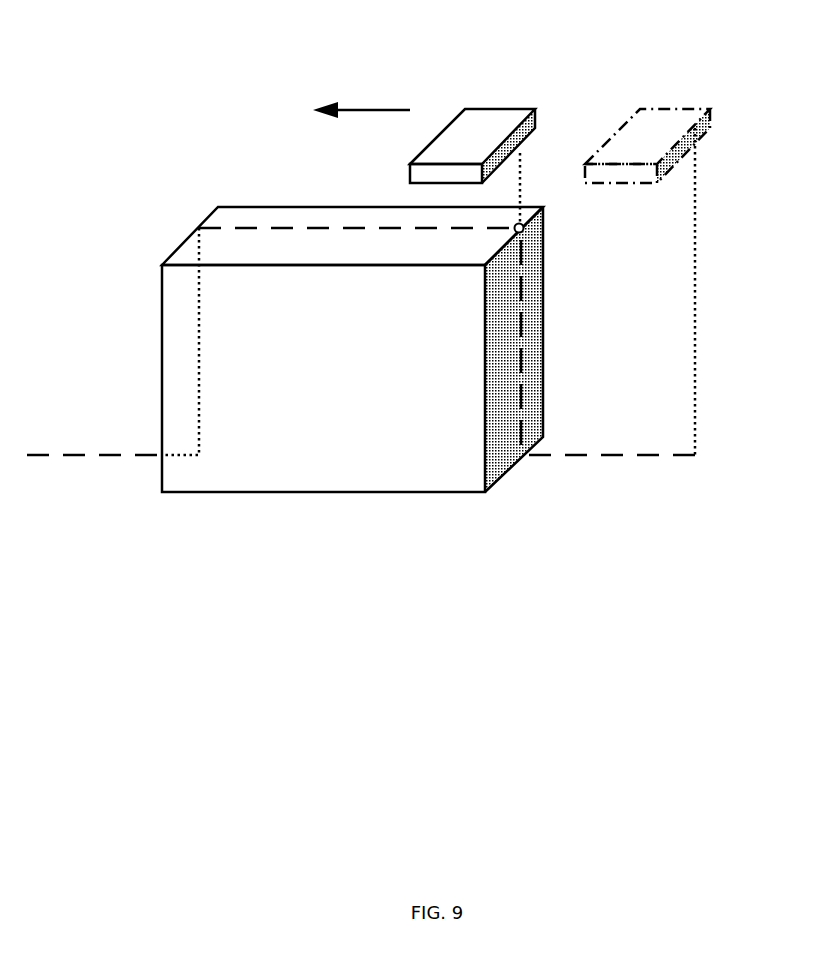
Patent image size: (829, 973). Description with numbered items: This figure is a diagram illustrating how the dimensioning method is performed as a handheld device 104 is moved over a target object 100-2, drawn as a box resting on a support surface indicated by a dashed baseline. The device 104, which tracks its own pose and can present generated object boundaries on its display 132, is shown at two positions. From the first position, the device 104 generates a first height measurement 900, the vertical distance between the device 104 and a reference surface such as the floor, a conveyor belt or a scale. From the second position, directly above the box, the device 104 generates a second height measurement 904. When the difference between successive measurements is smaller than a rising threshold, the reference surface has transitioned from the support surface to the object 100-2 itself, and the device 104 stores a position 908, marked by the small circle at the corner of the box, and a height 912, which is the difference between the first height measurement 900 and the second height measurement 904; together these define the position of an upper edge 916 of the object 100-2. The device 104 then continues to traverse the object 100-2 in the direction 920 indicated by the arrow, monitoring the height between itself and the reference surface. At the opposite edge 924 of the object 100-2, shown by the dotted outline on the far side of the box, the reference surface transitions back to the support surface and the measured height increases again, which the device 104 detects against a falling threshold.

The object 100-2 is at (309, 475).
The device 104 is at (560, 101).
The display 132 is at (672, 98).
The first height measurement 900 is at (386, 291).
The second height measurement 904 is at (544, 186).
The position 908 is at (524, 229).
The height 912 is at (522, 368).
The upper edge 916 is at (488, 262).
The direction 920 is at (360, 108).
The edge 924 is at (175, 248).